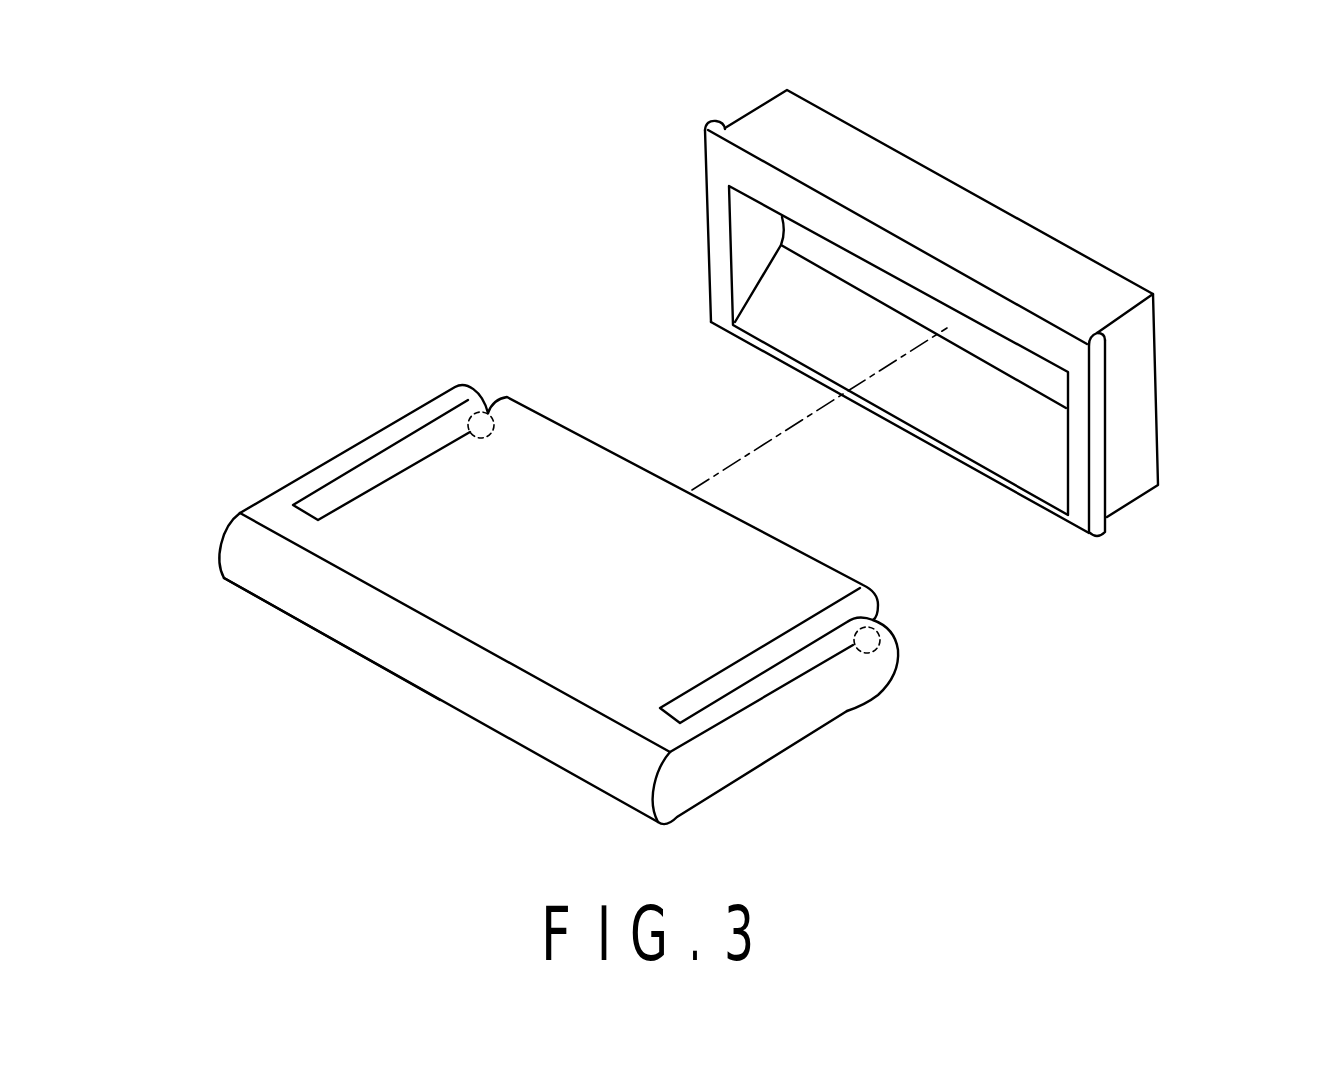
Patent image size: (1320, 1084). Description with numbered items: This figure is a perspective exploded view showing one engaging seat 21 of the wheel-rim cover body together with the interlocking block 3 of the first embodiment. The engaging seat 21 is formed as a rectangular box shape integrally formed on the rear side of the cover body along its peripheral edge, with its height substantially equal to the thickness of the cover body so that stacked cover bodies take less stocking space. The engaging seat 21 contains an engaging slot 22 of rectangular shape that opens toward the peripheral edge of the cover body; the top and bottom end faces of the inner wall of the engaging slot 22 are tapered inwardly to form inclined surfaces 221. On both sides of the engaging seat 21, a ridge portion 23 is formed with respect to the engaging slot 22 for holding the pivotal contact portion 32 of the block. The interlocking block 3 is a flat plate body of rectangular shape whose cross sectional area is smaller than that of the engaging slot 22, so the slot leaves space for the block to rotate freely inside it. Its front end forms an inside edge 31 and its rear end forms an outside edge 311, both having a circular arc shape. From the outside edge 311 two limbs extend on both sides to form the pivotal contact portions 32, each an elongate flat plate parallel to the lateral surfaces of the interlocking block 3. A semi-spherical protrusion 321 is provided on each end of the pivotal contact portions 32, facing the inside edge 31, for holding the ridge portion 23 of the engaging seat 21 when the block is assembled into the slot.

The interlocking block 3 is at (413, 487).
The inside edge 31 is at (603, 437).
The outside edge 311 is at (417, 688).
The pivotal contact portion 32 is at (423, 400).
The semi-spherical protrusion 321 is at (495, 403).
The engaging seat 21 is at (960, 186).
The engaging slot 22 is at (1015, 404).
The inclined surface 221 is at (952, 428).
The ridge portion 23 is at (707, 125).